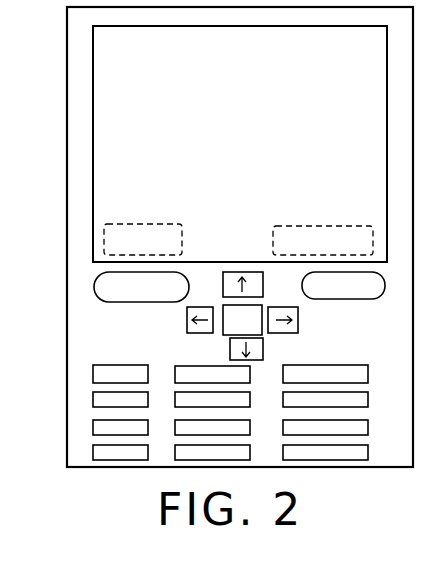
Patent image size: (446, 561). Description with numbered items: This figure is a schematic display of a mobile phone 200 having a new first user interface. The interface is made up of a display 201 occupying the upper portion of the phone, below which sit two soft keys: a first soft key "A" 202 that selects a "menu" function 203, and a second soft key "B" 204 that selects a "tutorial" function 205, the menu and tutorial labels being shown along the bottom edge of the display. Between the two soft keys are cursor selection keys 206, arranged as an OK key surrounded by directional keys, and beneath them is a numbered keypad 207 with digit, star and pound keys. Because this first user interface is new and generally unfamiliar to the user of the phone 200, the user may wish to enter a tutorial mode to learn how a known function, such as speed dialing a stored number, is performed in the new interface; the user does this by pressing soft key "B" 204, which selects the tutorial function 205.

The mobile phone 200 is at (330, 469).
The display 201 is at (262, 115).
The first soft key "A" 202 is at (134, 305).
The "menu" function 203 is at (112, 223).
The second soft key "B" 204 is at (331, 300).
The "tutorial" function 205 is at (298, 224).
The cursor selection keys 206 is at (280, 339).
The numbered keypad 207 is at (91, 355).